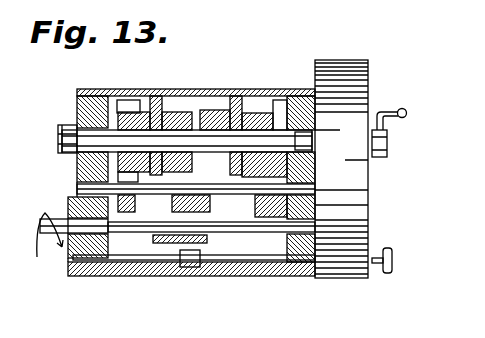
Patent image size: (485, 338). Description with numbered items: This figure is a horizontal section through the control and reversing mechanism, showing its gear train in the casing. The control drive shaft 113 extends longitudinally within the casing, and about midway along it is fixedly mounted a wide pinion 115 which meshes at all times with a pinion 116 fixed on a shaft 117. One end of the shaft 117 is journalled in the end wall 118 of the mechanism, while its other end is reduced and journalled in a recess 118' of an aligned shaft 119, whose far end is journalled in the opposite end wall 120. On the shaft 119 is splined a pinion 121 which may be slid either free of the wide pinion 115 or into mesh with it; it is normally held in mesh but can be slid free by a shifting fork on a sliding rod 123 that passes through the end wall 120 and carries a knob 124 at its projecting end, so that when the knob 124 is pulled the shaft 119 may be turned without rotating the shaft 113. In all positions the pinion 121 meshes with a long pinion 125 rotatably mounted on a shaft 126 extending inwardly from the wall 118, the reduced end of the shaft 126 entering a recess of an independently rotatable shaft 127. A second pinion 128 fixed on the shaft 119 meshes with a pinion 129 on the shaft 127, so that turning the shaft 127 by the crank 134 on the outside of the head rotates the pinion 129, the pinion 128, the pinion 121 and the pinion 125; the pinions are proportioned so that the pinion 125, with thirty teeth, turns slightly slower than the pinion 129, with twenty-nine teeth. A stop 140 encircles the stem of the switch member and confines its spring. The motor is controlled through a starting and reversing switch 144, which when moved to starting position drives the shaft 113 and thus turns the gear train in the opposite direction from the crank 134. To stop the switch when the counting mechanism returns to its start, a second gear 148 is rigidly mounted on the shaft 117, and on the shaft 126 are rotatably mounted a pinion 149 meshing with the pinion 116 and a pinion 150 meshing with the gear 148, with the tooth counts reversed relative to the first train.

The shaft 113 is at (176, 244).
The wide pinion 115 is at (176, 255).
The pinion 116 is at (170, 205).
The shaft 117 is at (82, 187).
The end wall 118 is at (175, 182).
The recess 118' is at (209, 208).
The aligned shaft 119 is at (317, 193).
The opposite end 120 is at (300, 173).
The pinion 121 is at (185, 139).
The sliding rod 123 is at (140, 250).
The knob 124 is at (388, 248).
The long pinion 125 is at (210, 120).
The shaft 126 is at (78, 158).
The independently rotatable shaft 127 is at (305, 147).
The second pinion 128 is at (270, 217).
The pinion 129 is at (260, 120).
The crank 134 is at (389, 108).
The stop 140 is at (118, 88).
The starting and reversing switch 144 is at (290, 86).
The second gear 148 is at (127, 193).
The pinion 149 is at (182, 120).
The pinion 150 is at (125, 110).